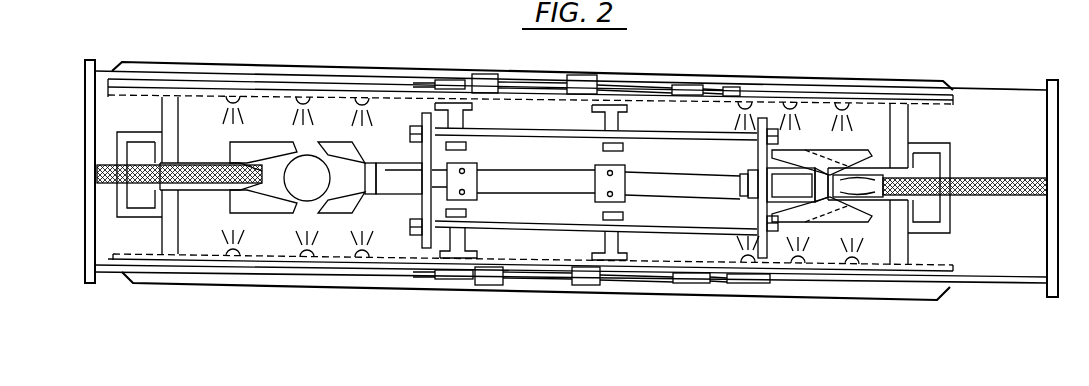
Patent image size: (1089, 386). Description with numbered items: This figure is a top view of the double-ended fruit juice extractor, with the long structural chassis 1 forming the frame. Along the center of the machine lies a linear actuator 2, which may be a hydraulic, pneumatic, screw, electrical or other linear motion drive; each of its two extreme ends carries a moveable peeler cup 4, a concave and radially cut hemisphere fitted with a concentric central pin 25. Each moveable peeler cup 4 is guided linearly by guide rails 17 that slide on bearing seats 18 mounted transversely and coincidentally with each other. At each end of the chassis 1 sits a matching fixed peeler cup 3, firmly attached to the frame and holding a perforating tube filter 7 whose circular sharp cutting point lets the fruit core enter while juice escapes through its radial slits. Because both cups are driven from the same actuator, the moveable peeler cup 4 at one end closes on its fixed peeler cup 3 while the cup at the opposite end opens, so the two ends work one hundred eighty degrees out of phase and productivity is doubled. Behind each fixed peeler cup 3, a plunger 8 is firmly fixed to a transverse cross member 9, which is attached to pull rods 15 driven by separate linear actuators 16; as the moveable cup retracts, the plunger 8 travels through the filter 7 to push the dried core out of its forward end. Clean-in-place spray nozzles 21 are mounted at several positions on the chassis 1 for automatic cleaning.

The structural chassis 1 is at (924, 76).
The linear actuator 2 is at (510, 163).
The fixed peeler cup 3 is at (214, 140).
The moveable peeler cup 4 is at (347, 135).
The filter 7 is at (184, 162).
The plunger 8 is at (112, 192).
The transverse cross member 9 is at (88, 283).
The pull rod 15 is at (277, 83).
The linear actuator 16 is at (467, 74).
The guide rail 17 is at (757, 170).
The bearing seat 18 is at (633, 100).
The clean-in-place spray nozzle 21 is at (855, 130).
The concentric central pin 25 is at (392, 182).